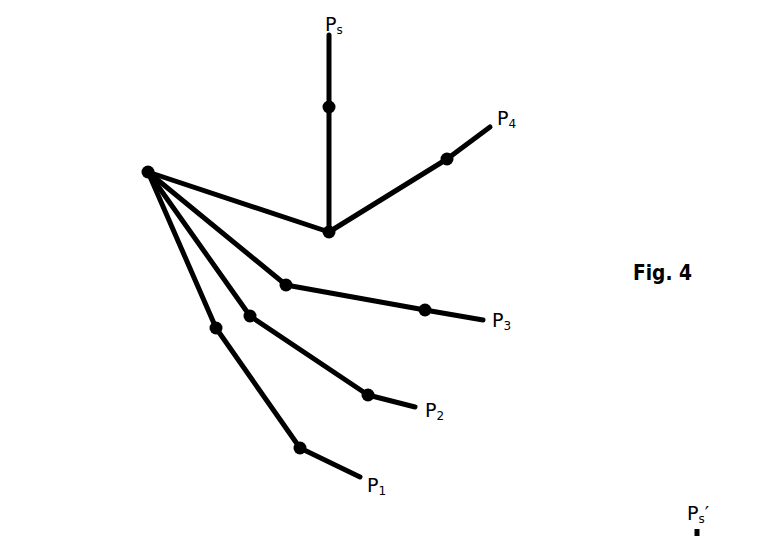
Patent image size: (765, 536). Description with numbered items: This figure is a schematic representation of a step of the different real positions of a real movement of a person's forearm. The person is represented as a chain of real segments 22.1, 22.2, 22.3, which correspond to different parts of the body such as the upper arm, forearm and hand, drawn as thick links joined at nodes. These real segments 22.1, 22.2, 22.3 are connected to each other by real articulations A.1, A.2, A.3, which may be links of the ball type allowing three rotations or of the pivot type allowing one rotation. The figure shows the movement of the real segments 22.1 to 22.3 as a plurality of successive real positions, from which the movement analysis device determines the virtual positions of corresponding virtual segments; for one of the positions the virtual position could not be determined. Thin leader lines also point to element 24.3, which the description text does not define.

The real segment 22.1 is at (172, 218).
The real segment 22.2 is at (270, 403).
The real segment 22.3 is at (331, 82).
The nodes 24.3 is at (334, 111).
The real articulation A.1 is at (144, 175).
The real articulation A.2 is at (325, 234).
The real articulation A.3 is at (364, 400).